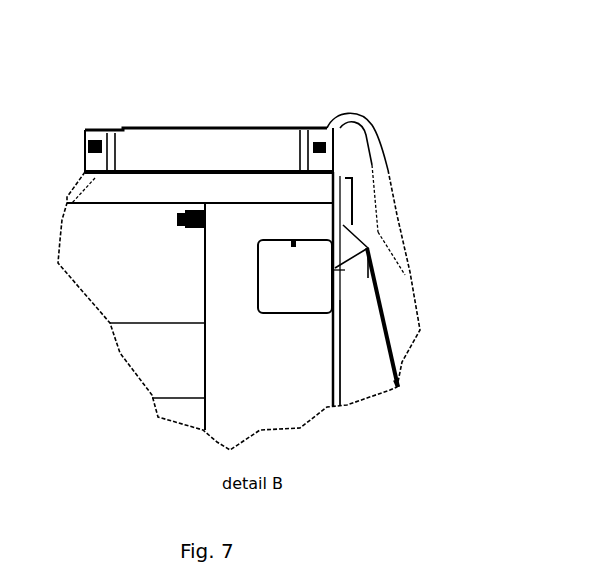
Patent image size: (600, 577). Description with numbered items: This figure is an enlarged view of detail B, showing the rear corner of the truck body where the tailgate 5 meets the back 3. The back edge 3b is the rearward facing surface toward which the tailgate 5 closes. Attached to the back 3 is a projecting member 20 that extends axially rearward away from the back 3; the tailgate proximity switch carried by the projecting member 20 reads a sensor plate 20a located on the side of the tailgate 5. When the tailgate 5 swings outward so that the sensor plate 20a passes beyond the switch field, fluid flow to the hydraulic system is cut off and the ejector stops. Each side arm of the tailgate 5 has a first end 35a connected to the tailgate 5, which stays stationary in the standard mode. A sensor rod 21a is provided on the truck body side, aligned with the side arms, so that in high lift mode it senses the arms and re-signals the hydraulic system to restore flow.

The first end 35a is at (283, 152).
The sensor rod 21a is at (188, 213).
The sensor plate 20a is at (377, 168).
The projecting member 20 is at (360, 227).
The back 3 is at (342, 328).
The tailgate 5 is at (400, 332).
The back edge 3b is at (340, 373).